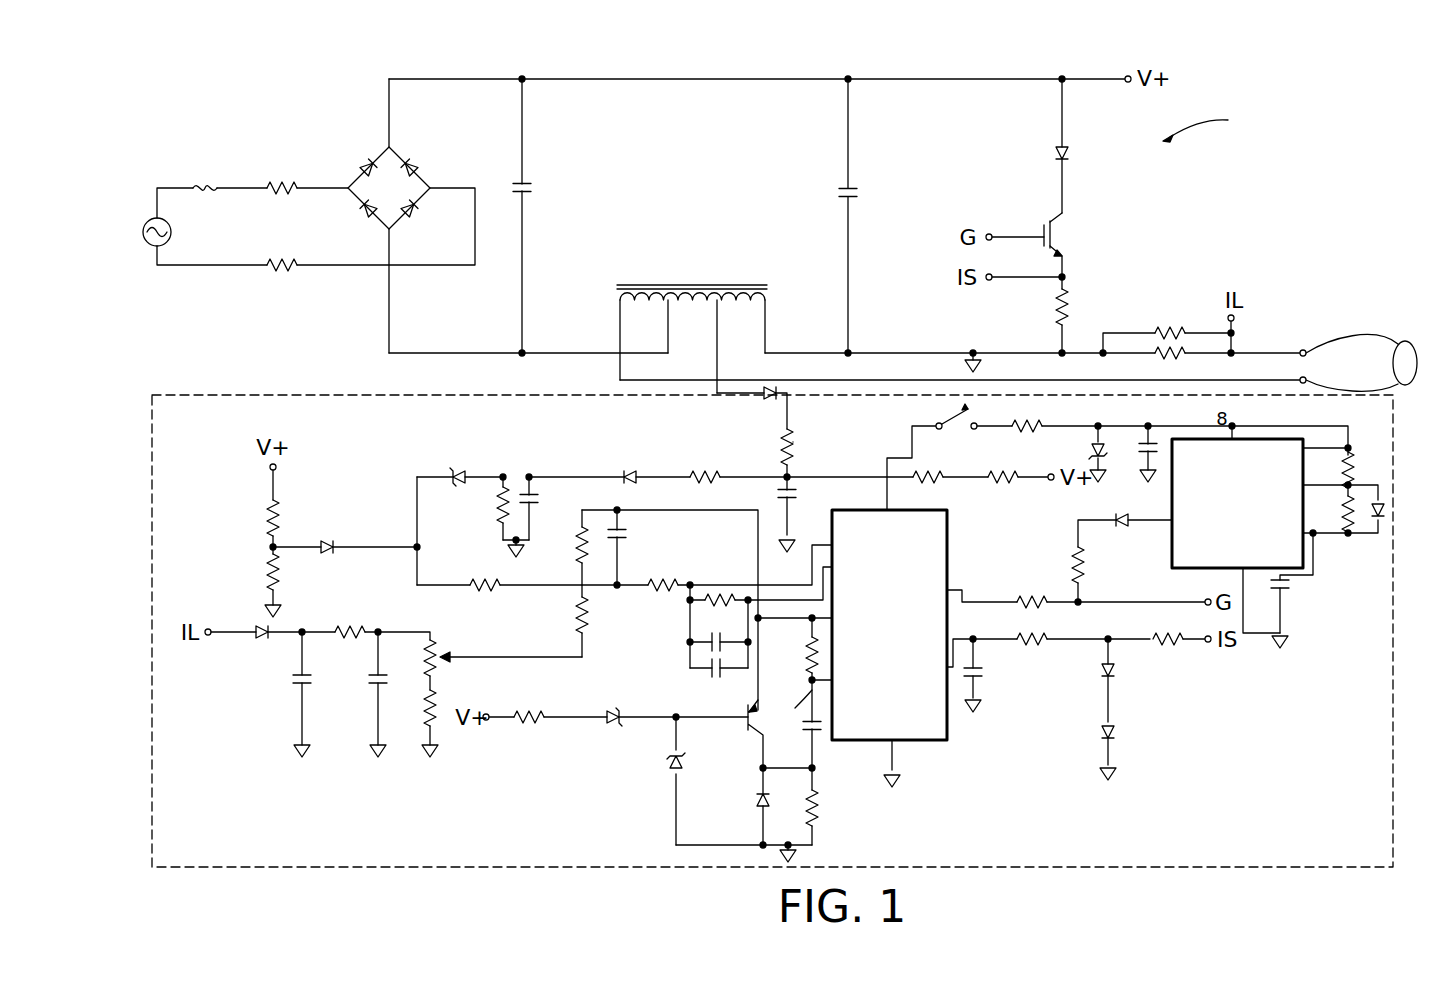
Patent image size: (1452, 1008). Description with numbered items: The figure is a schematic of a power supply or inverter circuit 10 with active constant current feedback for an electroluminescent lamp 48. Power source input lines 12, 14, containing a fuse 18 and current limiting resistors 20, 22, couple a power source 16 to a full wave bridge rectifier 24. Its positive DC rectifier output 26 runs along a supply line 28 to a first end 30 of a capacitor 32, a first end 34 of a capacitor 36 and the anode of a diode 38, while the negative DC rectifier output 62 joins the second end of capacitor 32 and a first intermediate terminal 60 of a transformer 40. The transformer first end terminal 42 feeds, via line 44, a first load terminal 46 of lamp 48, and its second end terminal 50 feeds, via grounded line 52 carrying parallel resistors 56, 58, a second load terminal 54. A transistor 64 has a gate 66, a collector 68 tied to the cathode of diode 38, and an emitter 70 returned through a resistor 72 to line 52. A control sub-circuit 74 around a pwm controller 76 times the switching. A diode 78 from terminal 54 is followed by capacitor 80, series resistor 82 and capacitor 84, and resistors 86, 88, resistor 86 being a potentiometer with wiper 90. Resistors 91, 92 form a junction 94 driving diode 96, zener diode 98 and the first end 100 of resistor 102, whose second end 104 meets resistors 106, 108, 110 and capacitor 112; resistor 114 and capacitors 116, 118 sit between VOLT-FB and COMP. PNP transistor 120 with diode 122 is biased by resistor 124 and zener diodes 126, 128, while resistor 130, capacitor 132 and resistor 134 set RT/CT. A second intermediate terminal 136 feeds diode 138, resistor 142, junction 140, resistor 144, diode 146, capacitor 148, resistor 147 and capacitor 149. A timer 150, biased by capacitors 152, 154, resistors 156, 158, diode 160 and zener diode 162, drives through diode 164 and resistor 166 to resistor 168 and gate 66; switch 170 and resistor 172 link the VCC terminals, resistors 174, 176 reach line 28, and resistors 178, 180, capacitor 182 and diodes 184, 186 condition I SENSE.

The power supply or inverter circuit 10 is at (1213, 122).
The power source input line 12 is at (228, 188).
The power source input line 14 is at (218, 266).
The power source 16 is at (147, 226).
The fuse 18 is at (196, 186).
The current limiting resistor 20 is at (282, 182).
The current limiting resistor 22 is at (288, 270).
The full wave bridge rectifier 24 is at (397, 169).
The positive DC rectifier output 26 is at (386, 146).
The supply line 28 is at (628, 78).
The first end of capacitor 30 is at (517, 184).
The capacitor 32 is at (535, 189).
The first end of capacitor 34 is at (853, 187).
The capacitor 36 is at (853, 197).
The diode 38 is at (1069, 152).
The transformer 40 is at (703, 283).
The first end terminal 42 is at (620, 322).
The line 44 is at (1253, 378).
The first load terminal 46 is at (1408, 384).
The electroluminescent lamp 48 is at (1416, 366).
The second end terminal 50 is at (768, 326).
The line 52 is at (892, 352).
The second load terminal 54 is at (1378, 339).
The parallel resistor 56 is at (1172, 327).
The parallel resistor 58 is at (1162, 348).
The first intermediate terminal 60 is at (670, 340).
The negative DC rectifier output 62 is at (395, 230).
The transistor 64 is at (1052, 230).
The gate 66 is at (1010, 236).
The collector 68 is at (1063, 213).
The emitter 70 is at (1066, 264).
The resistor 72 is at (1068, 303).
The control sub-circuit 74 is at (222, 393).
The constant current mode pwm controller 76 is at (950, 530).
The diode 78 is at (262, 640).
The capacitor 80 is at (307, 683).
The resistor 82 is at (352, 630).
The capacitor 84 is at (375, 686).
The resistor 86 is at (435, 670).
The resistor 88 is at (425, 722).
The wiper 90 is at (480, 691).
The resistor 91 is at (278, 510).
The resistor 92 is at (268, 578).
The junction 94 is at (277, 546).
The diode 96 is at (327, 553).
The zener diode 98 is at (462, 468).
The first end of resistor 100 is at (428, 584).
The resistor 102 is at (503, 584).
The second end of resistor 104 is at (505, 590).
The resistor 106 is at (578, 540).
The resistor 108 is at (724, 568).
The resistor 110 is at (588, 612).
The capacitor 112 is at (625, 534).
The resistor 114 is at (761, 577).
The capacitor 116 is at (690, 650).
The capacitor 118 is at (712, 676).
The PNP transistor 120 is at (752, 727).
The diode 122 is at (757, 803).
The resistor 124 is at (529, 728).
The zener diode 126 is at (612, 728).
The zener diode 128 is at (670, 766).
The resistor 130 is at (808, 650).
The capacitor 132 is at (822, 728).
The resistor 134 is at (820, 800).
The second intermediate terminal 136 is at (720, 352).
The diode 138 is at (766, 400).
The junction 140 is at (795, 473).
The resistor 142 is at (793, 442).
The resistor 144 is at (718, 483).
The diode 146 is at (636, 472).
The resistor 147 is at (498, 503).
The capacitor 148 is at (814, 514).
The capacitor 149 is at (535, 497).
The timer 150 is at (1308, 578).
The capacitor 152 is at (1288, 592).
The capacitor 154 is at (1142, 438).
The resistor 156 is at (1352, 465).
The resistor 158 is at (1350, 528).
The diode 160 is at (1385, 508).
The zener diode 162 is at (1090, 453).
The diode 164 is at (1122, 528).
The resistor 166 is at (1073, 565).
The resistor 168 is at (1025, 598).
The switch 170 is at (968, 428).
The resistor 172 is at (1030, 424).
The resistor 174 is at (935, 484).
The resistor 176 is at (1003, 484).
The resistor 178 is at (1044, 648).
The resistor 180 is at (1175, 648).
The capacitor 182 is at (979, 672).
The diode 184 is at (1116, 672).
The diode 186 is at (1118, 732).